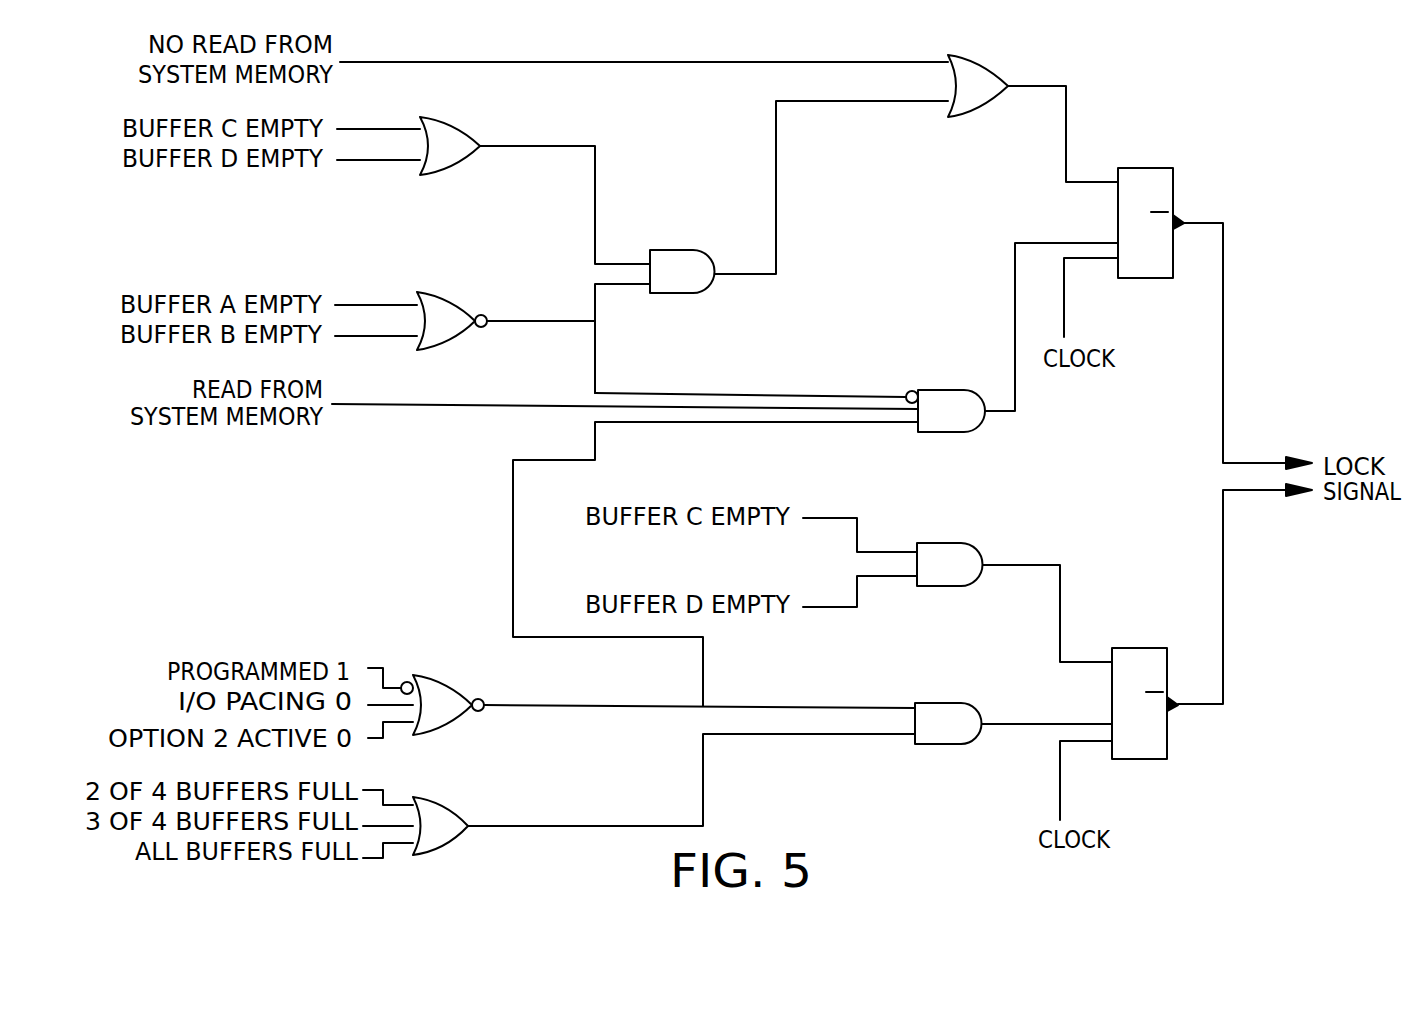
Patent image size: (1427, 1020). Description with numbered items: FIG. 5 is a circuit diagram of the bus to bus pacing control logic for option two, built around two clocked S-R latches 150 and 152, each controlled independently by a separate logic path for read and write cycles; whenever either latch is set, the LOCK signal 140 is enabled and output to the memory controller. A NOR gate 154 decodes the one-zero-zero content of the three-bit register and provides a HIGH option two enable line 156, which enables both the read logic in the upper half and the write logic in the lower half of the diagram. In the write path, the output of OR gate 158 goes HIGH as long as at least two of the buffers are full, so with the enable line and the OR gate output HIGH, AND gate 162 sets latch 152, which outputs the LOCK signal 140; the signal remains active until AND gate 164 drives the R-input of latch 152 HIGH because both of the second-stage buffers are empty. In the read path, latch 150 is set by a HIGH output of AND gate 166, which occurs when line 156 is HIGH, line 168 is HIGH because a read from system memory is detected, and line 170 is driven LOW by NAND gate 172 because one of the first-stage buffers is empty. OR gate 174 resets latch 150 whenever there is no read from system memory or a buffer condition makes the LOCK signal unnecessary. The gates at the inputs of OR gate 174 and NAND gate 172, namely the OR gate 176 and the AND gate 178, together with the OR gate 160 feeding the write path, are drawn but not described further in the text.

The LOCK signal 140 is at (1252, 463).
The clocked S-R latch 150 is at (1145, 168).
The clocked S-R latch 152 is at (1138, 648).
The NOR gate 154 is at (462, 692).
The option 2 enable line 156 is at (513, 548).
The OR gate 158 is at (703, 803).
The OR gate 160 is at (455, 806).
The AND gate 162 is at (950, 703).
The AND gate 164 is at (950, 543).
The AND gate 166 is at (955, 390).
The line 168 is at (485, 407).
The line 170 is at (598, 381).
The NAND gate 172 is at (453, 303).
The OR gate 174 is at (993, 73).
The OR gate 176 is at (458, 128).
The AND gate 178 is at (688, 250).